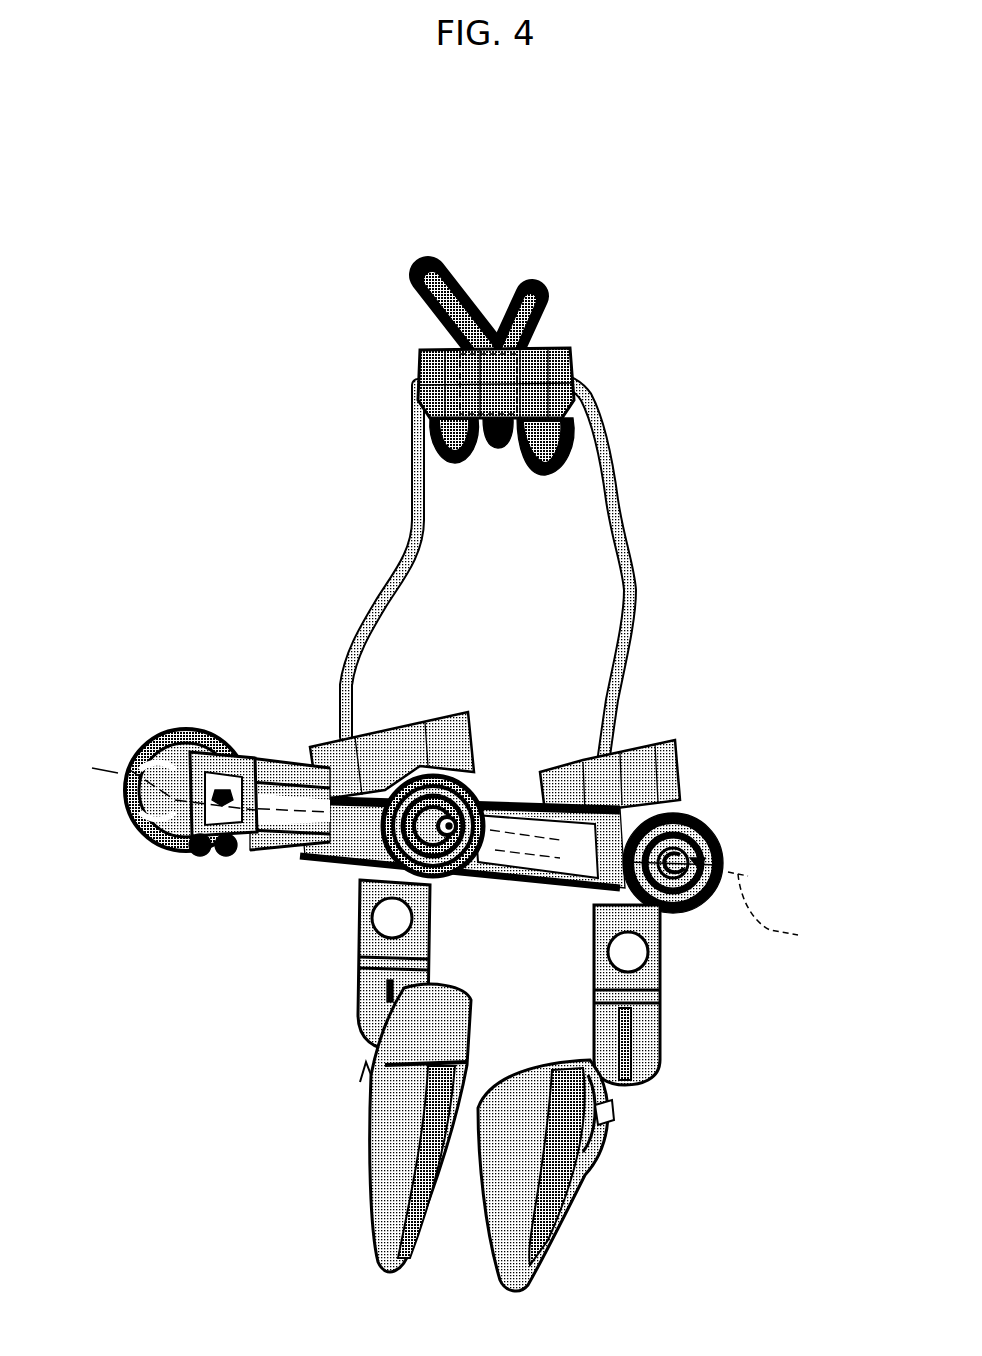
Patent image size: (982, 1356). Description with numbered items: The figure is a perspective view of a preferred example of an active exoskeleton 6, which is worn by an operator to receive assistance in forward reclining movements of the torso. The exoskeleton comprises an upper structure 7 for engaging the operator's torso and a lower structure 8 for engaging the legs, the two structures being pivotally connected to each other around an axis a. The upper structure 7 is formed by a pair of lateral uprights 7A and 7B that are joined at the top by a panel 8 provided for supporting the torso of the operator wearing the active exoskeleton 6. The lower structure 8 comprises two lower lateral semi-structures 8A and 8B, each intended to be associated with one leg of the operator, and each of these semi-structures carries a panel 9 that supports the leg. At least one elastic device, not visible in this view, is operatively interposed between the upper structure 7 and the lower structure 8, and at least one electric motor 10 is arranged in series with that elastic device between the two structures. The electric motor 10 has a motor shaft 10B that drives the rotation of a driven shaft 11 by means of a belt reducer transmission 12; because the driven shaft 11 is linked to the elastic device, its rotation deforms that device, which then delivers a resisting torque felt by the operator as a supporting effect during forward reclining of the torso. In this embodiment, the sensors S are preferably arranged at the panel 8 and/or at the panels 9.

The active exoskeleton 6 is at (775, 470).
The upper structure 7 is at (474, 590).
The lateral upright 7A is at (418, 525).
The lateral upright 7B is at (634, 557).
The lower structure 8 is at (540, 300).
The lower lateral semi-structure 8A is at (355, 945).
The lower lateral semi-structure 8B is at (662, 982).
The panel 9 is at (392, 1200).
The electric motor 10 is at (348, 798).
The motor shaft 10B is at (455, 830).
The driven shaft 11 is at (676, 862).
The belt reducer transmission 12 is at (620, 805).
The sensor S is at (520, 358).
The axis a is at (778, 914).